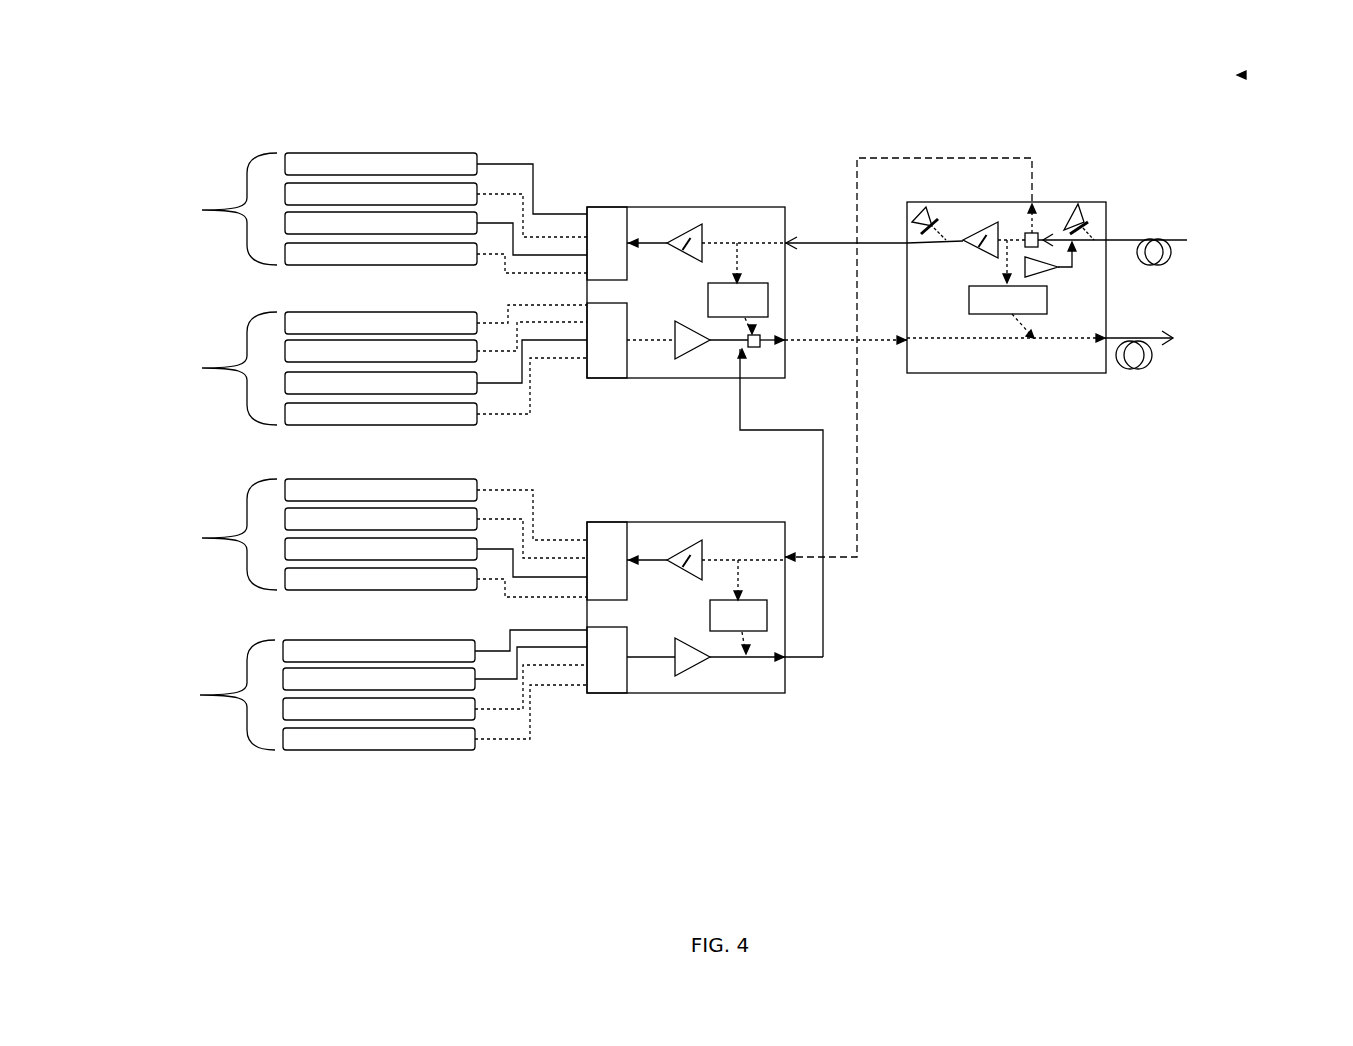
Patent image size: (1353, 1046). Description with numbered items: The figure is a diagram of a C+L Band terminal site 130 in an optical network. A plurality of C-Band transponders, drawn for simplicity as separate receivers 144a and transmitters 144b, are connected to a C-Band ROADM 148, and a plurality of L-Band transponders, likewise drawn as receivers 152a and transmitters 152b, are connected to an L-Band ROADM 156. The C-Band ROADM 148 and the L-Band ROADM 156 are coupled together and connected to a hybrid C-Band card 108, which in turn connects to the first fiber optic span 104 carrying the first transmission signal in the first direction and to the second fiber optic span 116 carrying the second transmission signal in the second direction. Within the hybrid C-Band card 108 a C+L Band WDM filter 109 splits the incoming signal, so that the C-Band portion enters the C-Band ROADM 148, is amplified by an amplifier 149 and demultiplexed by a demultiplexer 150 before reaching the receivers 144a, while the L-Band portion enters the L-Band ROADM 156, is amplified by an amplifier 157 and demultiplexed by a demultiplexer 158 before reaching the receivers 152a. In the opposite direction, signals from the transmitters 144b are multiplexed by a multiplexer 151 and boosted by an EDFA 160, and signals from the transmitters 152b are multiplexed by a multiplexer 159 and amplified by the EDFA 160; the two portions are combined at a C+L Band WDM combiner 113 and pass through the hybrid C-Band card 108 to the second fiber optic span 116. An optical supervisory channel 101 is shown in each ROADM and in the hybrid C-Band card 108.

The C+L Band terminal site 130 is at (1243, 71).
The hybrid C-Band card 108 is at (1060, 202).
The C+L Band WDM filter 109 is at (1025, 233).
The first fiber optic span 104 is at (1153, 237).
The second fiber optic span 116 is at (1138, 375).
The C-Band ROADM 148 is at (766, 207).
The demultiplexer 150 is at (607, 207).
The multiplexer 151 is at (607, 378).
The amplifier 149 is at (695, 223).
The EDFA 160 is at (690, 360).
The C+L Band WDM combiner 113 is at (757, 347).
The optical supervisory channel 101 is at (724, 312).
The L-Band ROADM 156 is at (765, 693).
The demultiplexer 158 is at (610, 522).
The multiplexer 159 is at (607, 693).
The amplifier 157 is at (700, 540).
The receivers 144a is at (361, 212).
The transmitters 144b is at (361, 365).
The receivers 152a is at (361, 537).
The transmitters 152b is at (361, 690).